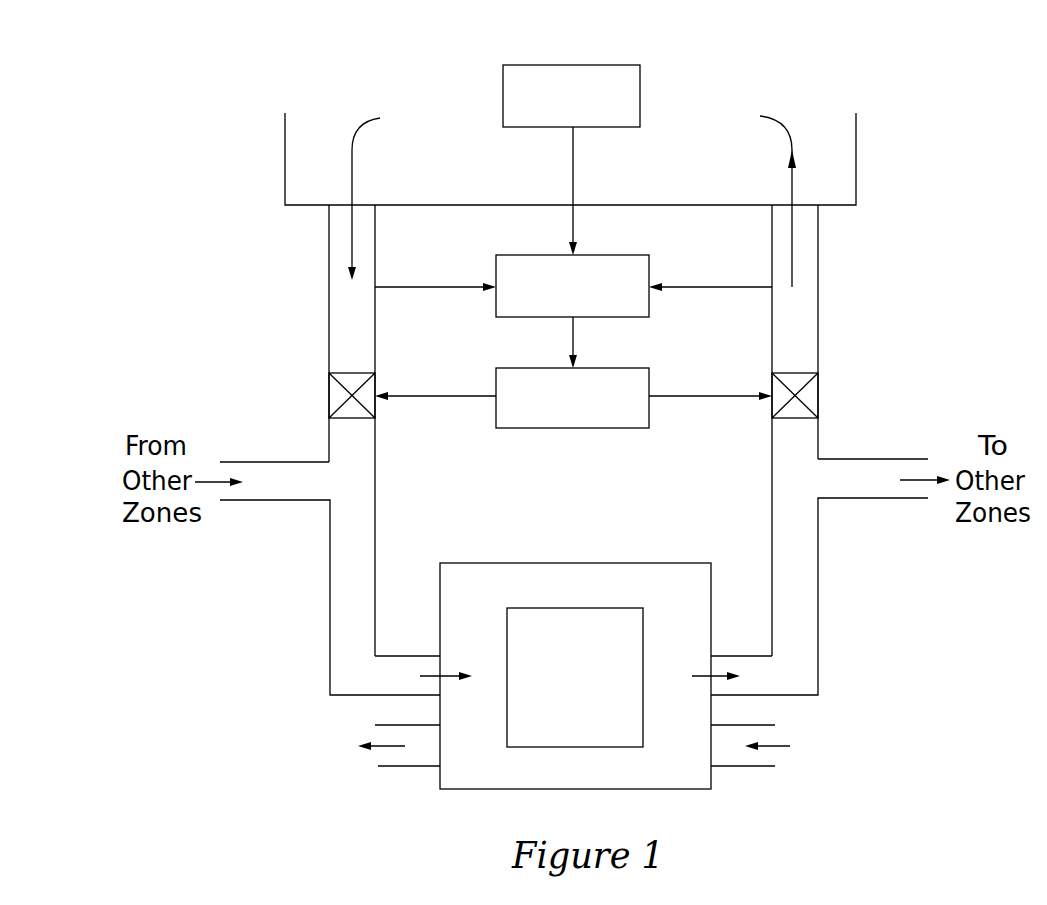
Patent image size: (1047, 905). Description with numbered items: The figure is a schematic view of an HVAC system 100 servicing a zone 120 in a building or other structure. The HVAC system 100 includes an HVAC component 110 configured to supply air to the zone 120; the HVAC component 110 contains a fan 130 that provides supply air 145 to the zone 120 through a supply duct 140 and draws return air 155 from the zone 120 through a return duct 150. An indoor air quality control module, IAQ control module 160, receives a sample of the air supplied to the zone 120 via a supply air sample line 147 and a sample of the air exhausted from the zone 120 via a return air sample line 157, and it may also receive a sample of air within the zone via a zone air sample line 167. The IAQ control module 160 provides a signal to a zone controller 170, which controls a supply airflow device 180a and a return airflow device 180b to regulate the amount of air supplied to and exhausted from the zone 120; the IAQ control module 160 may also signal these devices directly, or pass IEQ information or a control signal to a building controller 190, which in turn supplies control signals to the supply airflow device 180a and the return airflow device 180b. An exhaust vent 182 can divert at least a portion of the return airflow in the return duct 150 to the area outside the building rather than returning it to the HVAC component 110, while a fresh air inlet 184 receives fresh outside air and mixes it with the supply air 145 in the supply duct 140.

The HVAC system 100 is at (786, 60).
The HVAC component 110 is at (680, 789).
The zone 120 is at (857, 152).
The fan 130 is at (562, 748).
The supply duct 140 is at (818, 590).
The supply air 145 is at (755, 194).
The supply air sample line 147 is at (696, 287).
The return duct 150 is at (329, 585).
The return air 155 is at (387, 190).
The return air sample line 157 is at (414, 287).
The IAQ control module 160 is at (618, 255).
The zone air sample line 167 is at (573, 218).
The zone controller 170 is at (618, 368).
The supply airflow device 180a is at (818, 393).
The return airflow device 180b is at (329, 393).
The exhaust vent 182 is at (410, 766).
The fresh air inlet 184 is at (750, 766).
The building controller 190 is at (568, 72).